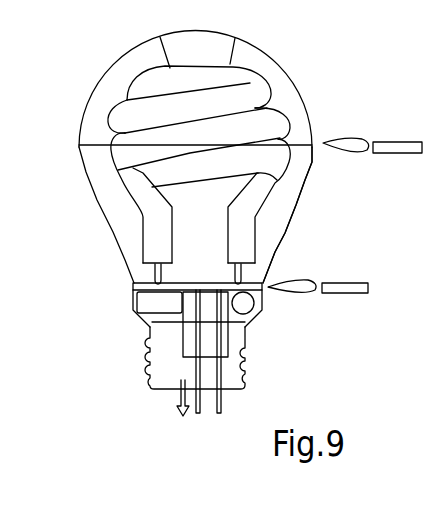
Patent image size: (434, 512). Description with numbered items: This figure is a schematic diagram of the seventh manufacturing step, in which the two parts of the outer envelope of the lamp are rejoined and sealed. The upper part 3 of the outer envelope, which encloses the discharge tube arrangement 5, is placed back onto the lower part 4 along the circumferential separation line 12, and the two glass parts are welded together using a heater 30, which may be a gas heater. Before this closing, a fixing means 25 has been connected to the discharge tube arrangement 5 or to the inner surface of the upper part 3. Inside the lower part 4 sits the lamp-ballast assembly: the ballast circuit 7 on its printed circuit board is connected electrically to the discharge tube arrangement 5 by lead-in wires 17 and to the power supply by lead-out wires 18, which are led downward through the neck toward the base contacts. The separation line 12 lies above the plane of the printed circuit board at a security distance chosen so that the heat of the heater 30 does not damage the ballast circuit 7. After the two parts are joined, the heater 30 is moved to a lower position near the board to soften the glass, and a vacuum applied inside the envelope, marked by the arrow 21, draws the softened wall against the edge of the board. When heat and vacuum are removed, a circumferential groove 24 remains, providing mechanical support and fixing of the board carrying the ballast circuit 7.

The upper part of the outer envelope 3 is at (100, 80).
The lower part of the outer envelope 4 is at (297, 210).
The discharge tube arrangement 5 is at (262, 90).
The ballast circuit 7 is at (262, 298).
The circumferential separation line 12 is at (95, 147).
The lead-in wires 17 is at (150, 277).
The lead-out wires 18 is at (243, 358).
The arrow marking the applied vacuum 21 is at (180, 403).
The circumferential groove 24 is at (132, 290).
The fixing means 25 is at (236, 50).
The heater 30 is at (370, 132).